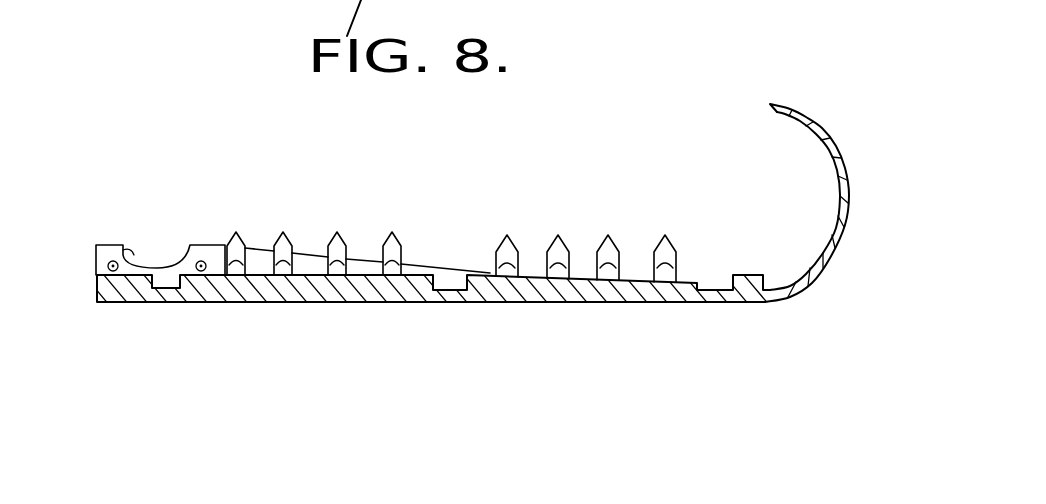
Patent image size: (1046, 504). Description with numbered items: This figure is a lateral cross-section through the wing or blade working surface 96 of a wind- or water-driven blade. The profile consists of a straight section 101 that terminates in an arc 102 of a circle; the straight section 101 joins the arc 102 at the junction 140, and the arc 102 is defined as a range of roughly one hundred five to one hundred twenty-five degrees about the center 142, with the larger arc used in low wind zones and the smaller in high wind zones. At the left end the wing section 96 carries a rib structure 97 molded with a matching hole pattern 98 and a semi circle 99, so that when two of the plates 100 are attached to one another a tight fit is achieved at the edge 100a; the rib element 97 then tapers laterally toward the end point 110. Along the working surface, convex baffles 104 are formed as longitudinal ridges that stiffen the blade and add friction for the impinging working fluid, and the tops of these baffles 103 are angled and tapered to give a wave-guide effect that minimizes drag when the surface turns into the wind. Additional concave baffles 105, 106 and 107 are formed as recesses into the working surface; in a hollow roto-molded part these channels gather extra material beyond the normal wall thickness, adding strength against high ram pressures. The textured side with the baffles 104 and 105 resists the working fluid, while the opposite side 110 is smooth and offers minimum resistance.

The wing or blade working surface 96 is at (588, 130).
The rib structure 97 is at (95, 258).
The hole pattern 98 is at (127, 257).
The semi circle 99 is at (182, 257).
The plate 100 is at (457, 269).
The edge 100a is at (206, 245).
The straight section 101 is at (354, 302).
The arc 102 is at (852, 223).
The tops of baffles 103 is at (388, 242).
The baffles 104 is at (376, 250).
The concave baffle 105 is at (174, 335).
The concave baffle 106 is at (452, 302).
The concave baffle 107 is at (713, 302).
The smooth side / end point 110 is at (630, 302).
The junction of straight section and arc 140 is at (757, 302).
The center 142 is at (755, 202).